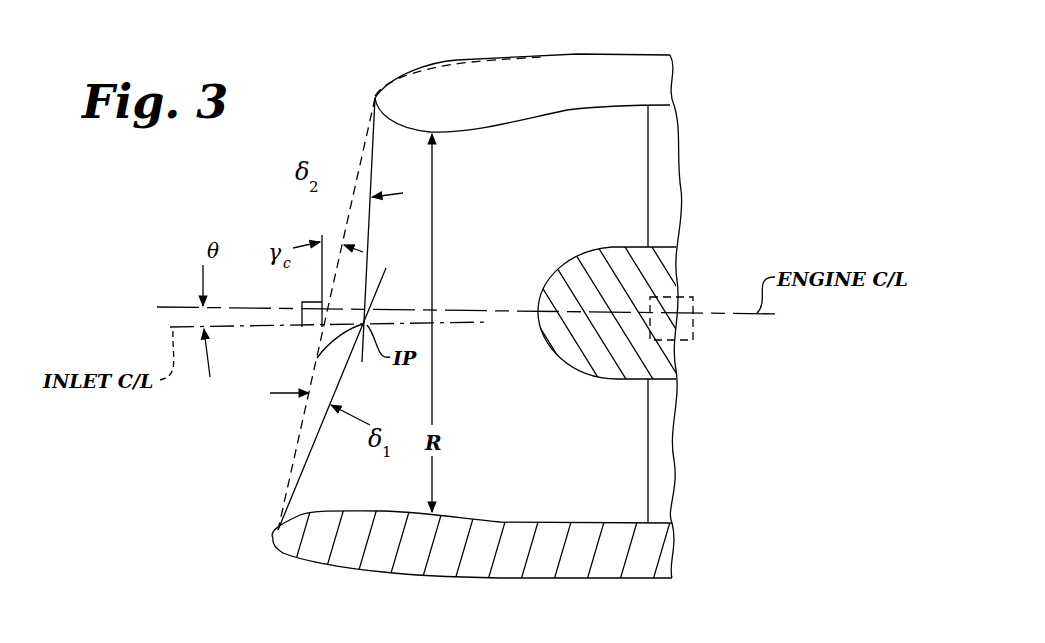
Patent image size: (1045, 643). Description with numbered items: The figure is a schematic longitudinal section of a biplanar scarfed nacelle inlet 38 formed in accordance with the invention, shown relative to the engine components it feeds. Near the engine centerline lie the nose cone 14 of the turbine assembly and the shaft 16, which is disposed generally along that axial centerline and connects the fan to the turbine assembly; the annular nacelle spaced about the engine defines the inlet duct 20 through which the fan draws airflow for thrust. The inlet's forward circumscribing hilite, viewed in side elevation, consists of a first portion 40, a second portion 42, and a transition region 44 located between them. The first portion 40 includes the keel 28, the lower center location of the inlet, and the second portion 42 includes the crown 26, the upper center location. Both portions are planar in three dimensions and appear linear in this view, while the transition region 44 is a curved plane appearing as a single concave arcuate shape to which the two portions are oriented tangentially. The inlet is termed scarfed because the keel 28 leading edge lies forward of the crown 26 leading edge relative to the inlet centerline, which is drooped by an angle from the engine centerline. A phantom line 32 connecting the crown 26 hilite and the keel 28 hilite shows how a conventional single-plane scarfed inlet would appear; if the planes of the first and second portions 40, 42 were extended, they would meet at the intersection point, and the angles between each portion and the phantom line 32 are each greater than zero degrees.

The nose cone 14 is at (568, 262).
The shaft 16 is at (687, 297).
The inlet duct 20 is at (635, 172).
The crown 26 is at (422, 77).
The keel 28 is at (317, 562).
The phantom line 32 is at (292, 473).
The biplanar scarfed nacelle inlet 38 is at (238, 527).
The first portion 40 is at (310, 453).
The second portion 42 is at (370, 227).
The transition region 44 is at (317, 358).